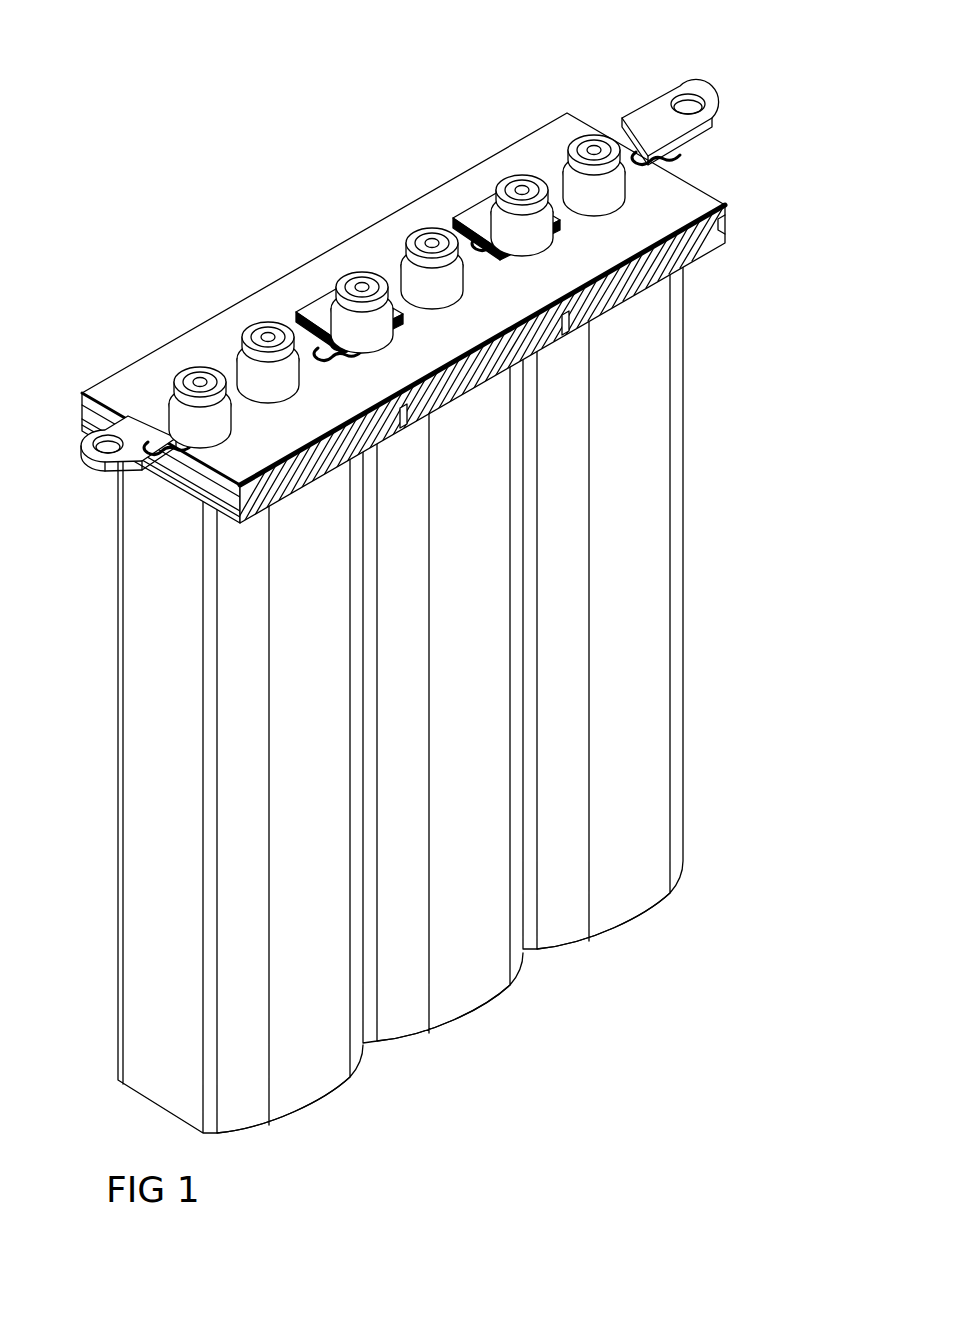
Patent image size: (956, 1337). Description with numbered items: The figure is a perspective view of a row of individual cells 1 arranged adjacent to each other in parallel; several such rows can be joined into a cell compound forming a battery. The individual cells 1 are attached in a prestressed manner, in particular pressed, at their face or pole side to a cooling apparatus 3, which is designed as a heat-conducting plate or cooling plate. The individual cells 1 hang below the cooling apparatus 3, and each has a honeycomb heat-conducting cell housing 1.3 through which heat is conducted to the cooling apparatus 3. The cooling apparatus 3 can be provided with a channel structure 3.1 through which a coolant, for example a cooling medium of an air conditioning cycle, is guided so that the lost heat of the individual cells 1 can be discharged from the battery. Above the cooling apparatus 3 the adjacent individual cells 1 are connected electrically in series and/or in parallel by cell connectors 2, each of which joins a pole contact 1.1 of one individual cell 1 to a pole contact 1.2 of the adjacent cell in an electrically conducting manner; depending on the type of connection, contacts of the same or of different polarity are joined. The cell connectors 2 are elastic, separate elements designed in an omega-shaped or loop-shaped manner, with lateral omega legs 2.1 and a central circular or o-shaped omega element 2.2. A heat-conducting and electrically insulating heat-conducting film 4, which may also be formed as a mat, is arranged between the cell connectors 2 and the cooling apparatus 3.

The individual cell 1 is at (640, 910).
The pole contact 1.1 is at (552, 238).
The pole contact 1.2 is at (444, 290).
The heat-conducting cell housing 1.3 is at (608, 942).
The cell connector 2 is at (654, 100).
The omega leg 2.1 is at (492, 208).
The omega element 2.2 is at (674, 166).
The cooling apparatus 3 is at (325, 470).
The channel structure 3.1 is at (410, 425).
The heat-conducting film 4 is at (203, 342).